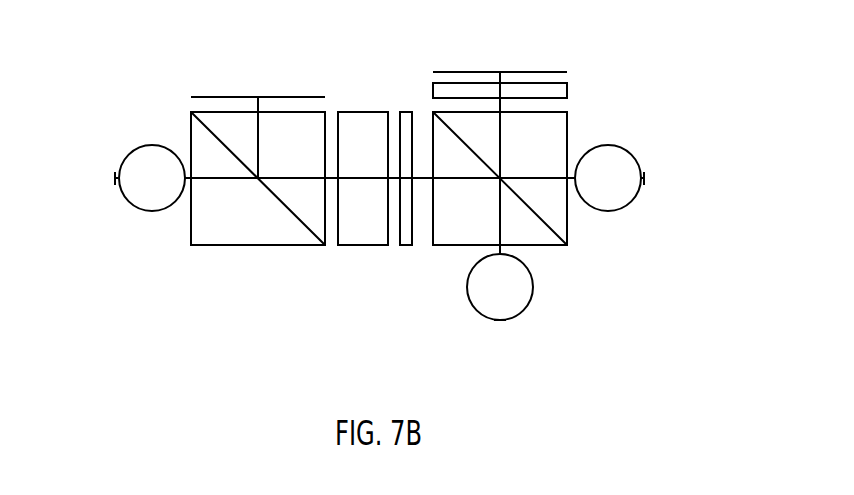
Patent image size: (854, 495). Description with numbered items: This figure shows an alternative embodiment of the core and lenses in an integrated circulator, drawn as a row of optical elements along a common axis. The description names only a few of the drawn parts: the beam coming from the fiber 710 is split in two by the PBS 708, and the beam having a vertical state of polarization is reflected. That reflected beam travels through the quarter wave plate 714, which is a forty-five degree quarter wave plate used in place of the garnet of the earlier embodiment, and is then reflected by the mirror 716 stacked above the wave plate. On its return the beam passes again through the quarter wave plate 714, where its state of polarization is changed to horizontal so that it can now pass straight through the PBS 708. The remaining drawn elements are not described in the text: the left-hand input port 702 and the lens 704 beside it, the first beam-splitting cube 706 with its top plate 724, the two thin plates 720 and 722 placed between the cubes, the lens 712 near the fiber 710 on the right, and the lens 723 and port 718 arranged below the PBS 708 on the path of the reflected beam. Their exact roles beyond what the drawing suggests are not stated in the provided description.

The input light 702 is at (111, 177).
The first lens 704 is at (152, 219).
The first polarizing beam splitter 706 is at (246, 250).
The PBS 708 is at (448, 258).
The fiber 710 is at (649, 178).
The second lens 712 is at (608, 219).
The quarter wave plate 714 is at (579, 91).
The mirror 716 is at (579, 72).
The output port 718 is at (502, 325).
The half wave plate 720 is at (364, 252).
The wave plate 722 is at (407, 258).
The third lens 723 is at (546, 288).
The mirror 724 is at (284, 93).